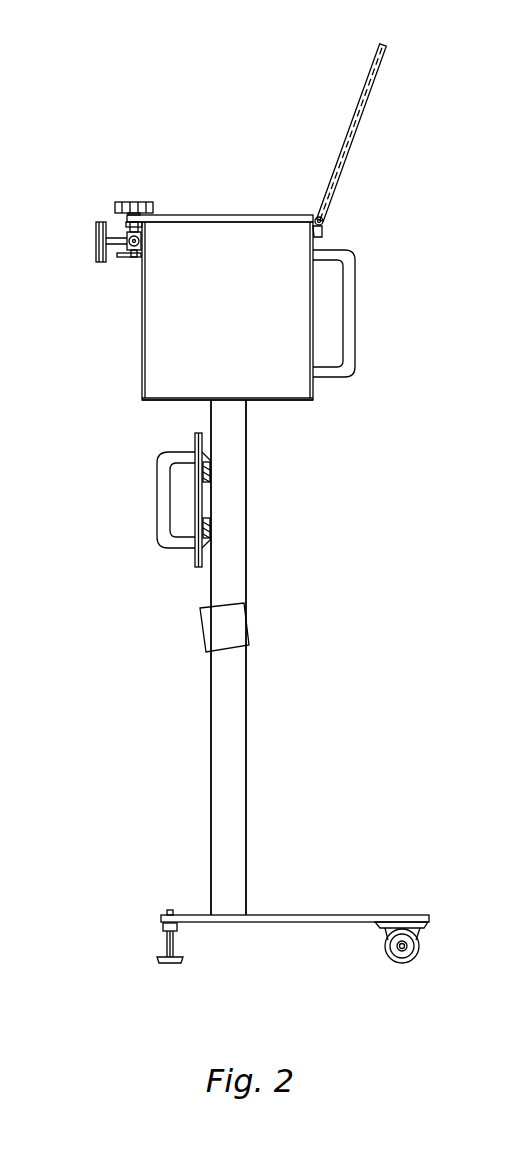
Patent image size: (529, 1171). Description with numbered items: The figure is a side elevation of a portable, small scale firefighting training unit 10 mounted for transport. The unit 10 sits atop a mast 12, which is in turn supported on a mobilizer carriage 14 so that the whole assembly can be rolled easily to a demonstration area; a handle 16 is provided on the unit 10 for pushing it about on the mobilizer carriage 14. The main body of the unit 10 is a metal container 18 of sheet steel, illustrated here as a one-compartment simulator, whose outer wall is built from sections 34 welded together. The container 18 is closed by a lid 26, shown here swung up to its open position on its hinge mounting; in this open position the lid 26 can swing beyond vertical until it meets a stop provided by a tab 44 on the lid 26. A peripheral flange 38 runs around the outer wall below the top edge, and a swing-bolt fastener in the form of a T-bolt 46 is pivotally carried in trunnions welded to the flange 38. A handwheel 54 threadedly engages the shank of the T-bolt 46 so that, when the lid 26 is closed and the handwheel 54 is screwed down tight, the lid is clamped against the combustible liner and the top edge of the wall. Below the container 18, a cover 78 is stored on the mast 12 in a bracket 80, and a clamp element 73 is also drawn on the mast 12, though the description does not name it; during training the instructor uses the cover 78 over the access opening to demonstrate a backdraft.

The portable small scale firefighting training unit 10 is at (421, 251).
The mast 12 is at (247, 757).
The mobilizer carriage 14 is at (316, 912).
The handle 16 is at (356, 312).
The metal container 18 is at (139, 362).
The lid 26 is at (365, 112).
The sections 34 is at (277, 383).
The peripheral flange 38 is at (124, 258).
The tab 44 is at (322, 230).
The T-bolt 46 is at (150, 245).
The handwheel 54 is at (135, 203).
The clamp 73 is at (247, 622).
The cover 78 is at (195, 565).
The bracket 80 is at (202, 500).